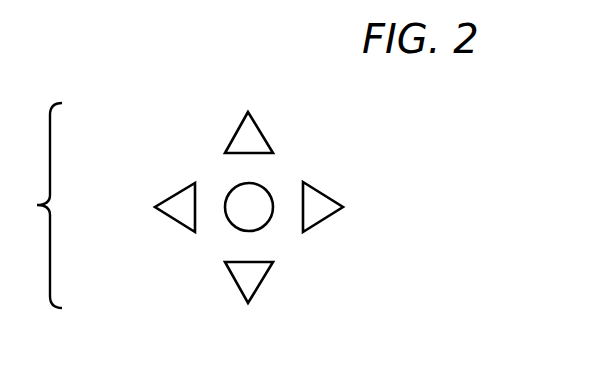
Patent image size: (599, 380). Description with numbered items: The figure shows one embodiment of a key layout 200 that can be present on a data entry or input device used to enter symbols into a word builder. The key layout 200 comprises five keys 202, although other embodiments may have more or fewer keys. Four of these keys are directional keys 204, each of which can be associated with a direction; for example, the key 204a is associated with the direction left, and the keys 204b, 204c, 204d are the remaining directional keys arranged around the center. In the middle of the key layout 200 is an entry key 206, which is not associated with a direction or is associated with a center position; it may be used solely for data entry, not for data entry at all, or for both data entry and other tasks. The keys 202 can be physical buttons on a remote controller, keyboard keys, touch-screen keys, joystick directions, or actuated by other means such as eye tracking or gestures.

The key layout 200 is at (170, 96).
The keys 202 is at (236, 137).
The directional keys 204 is at (303, 222).
The key 204a is at (175, 220).
The key 204b is at (258, 126).
The key 204c is at (330, 213).
The key 204d is at (237, 278).
The entry key 206 is at (266, 188).